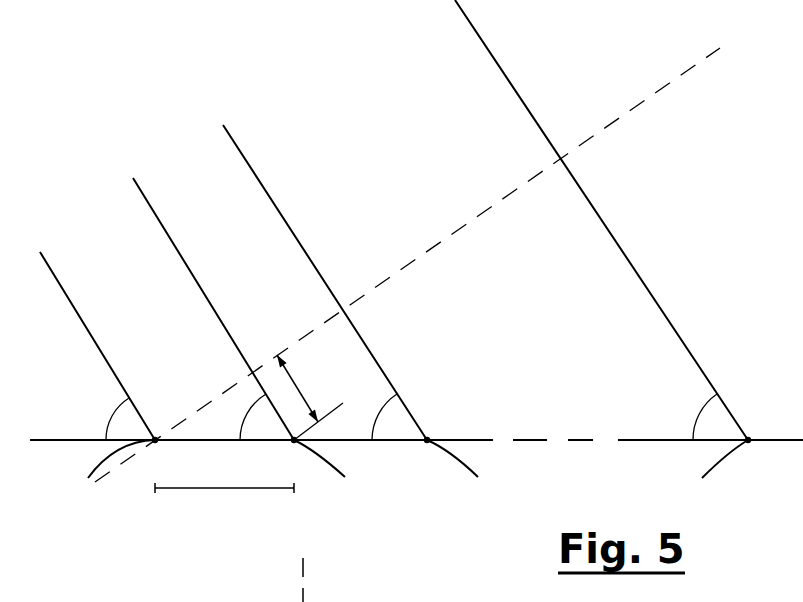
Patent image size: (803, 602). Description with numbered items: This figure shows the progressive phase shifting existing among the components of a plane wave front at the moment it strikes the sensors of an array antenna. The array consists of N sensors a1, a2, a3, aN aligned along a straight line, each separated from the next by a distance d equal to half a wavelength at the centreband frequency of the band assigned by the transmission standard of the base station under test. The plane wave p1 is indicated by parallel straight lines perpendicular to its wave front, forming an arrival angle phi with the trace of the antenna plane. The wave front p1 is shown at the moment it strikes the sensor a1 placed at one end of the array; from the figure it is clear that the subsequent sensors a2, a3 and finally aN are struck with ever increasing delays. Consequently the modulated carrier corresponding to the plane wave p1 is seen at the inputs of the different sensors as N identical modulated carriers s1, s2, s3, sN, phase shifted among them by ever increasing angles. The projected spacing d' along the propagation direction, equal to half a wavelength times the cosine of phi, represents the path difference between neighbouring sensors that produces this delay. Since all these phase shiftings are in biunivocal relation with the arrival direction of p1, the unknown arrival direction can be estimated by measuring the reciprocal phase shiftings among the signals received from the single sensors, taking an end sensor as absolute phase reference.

The plane wave p1 is at (394, 220).
The sensor a1 is at (129, 435).
The sensor a2 is at (263, 429).
The sensor a3 is at (396, 431).
The sensor aN is at (722, 434).
The modulated carrier s1 is at (110, 472).
The modulated carrier s2 is at (335, 472).
The modulated carrier s3 is at (466, 472).
The modulated carrier sN is at (714, 472).
The distance d is at (224, 504).
The effective path difference d' = lambda/2 cos(phi) d' is at (391, 385).